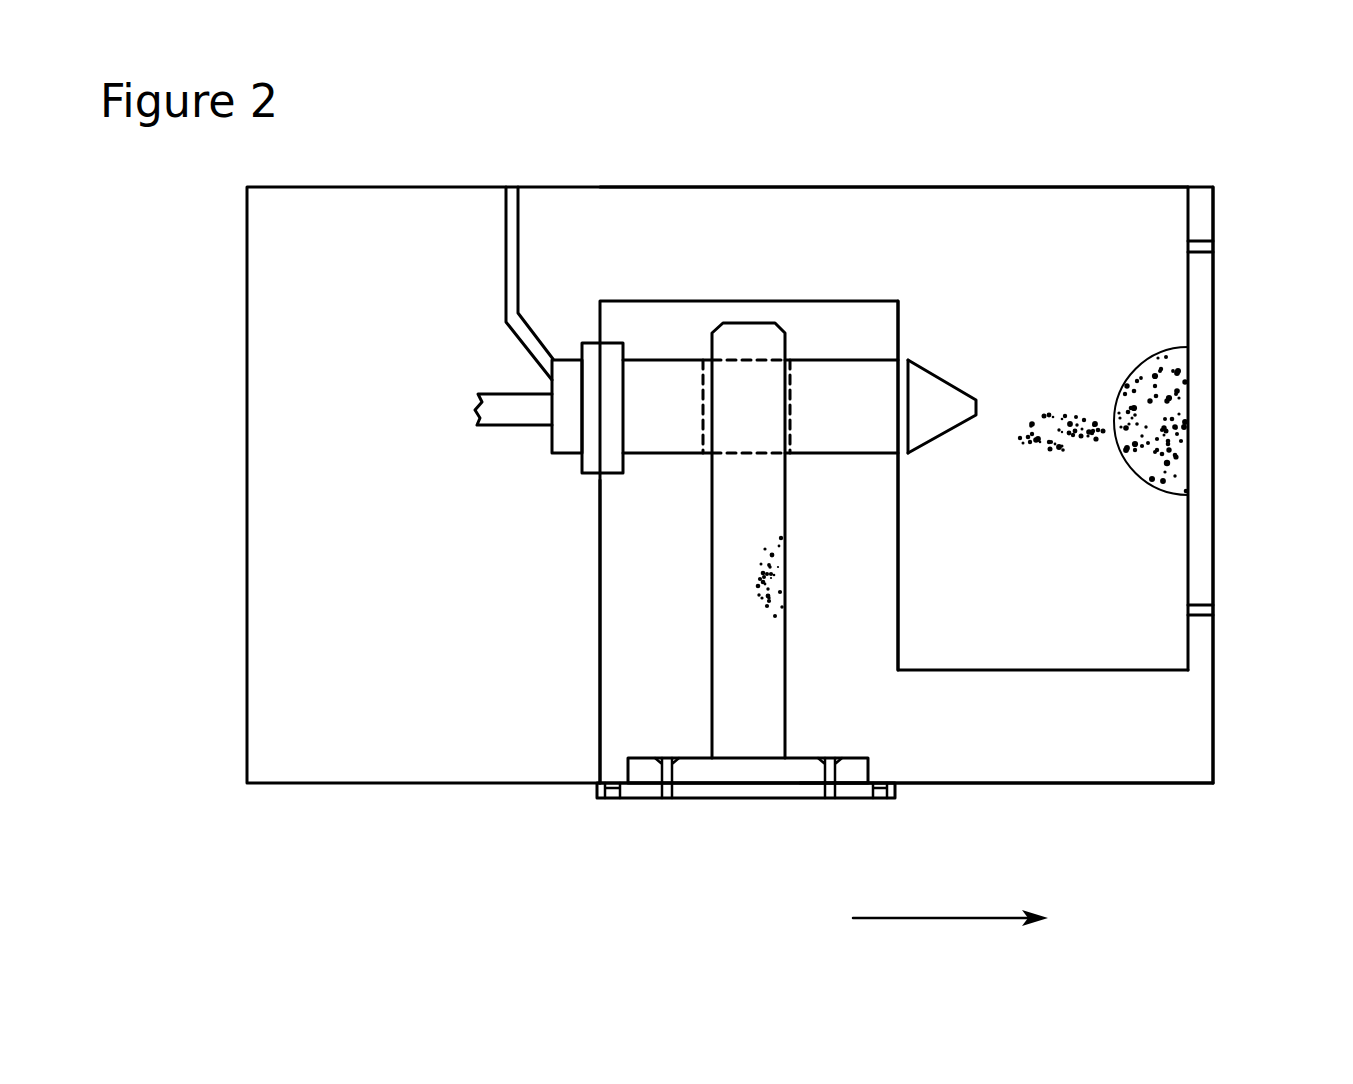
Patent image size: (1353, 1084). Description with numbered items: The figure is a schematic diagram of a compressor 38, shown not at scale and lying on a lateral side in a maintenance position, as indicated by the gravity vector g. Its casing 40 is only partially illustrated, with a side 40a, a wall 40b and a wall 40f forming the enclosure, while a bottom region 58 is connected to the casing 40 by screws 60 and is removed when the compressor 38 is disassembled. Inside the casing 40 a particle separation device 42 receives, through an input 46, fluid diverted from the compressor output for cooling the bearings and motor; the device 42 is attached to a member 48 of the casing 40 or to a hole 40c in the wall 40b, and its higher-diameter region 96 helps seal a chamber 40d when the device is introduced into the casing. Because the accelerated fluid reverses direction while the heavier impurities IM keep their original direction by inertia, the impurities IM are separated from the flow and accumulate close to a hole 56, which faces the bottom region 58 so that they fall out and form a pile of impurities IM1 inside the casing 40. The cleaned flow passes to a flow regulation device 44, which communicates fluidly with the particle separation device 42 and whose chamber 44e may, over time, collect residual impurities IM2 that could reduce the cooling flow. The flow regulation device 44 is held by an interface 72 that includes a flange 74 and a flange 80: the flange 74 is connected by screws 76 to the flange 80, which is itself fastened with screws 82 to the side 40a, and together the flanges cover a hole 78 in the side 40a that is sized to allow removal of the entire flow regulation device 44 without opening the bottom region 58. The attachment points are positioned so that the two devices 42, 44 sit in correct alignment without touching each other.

The compressor 38 is at (706, 101).
The casing 40 is at (996, 188).
The side of the casing 40a is at (1128, 784).
The wall of the casing 40b is at (598, 623).
The hole in wall 40c is at (598, 475).
The chamber 40d is at (703, 412).
The housing top wall 40f is at (894, 226).
The particle separation device 42 is at (817, 417).
The flow regulation device 44 is at (783, 585).
The mixing chamber 44e is at (898, 600).
The input 46 is at (490, 392).
The member of the casing 48 is at (505, 248).
The hole 56 is at (978, 400).
The bottom region 58 is at (1214, 420).
The screws 60 is at (1208, 243).
The interface 72 is at (408, 557).
The flange 74 is at (692, 756).
The screws 76 is at (660, 784).
The hole 78 is at (883, 783).
The flange 80 is at (746, 862).
The screws 82 is at (605, 790).
The specific region 96 is at (614, 413).
The impurities IM is at (1047, 425).
The pile of impurities IM1 is at (1162, 445).
The impurities IM2 is at (762, 552).
The gravity vector g is at (950, 932).